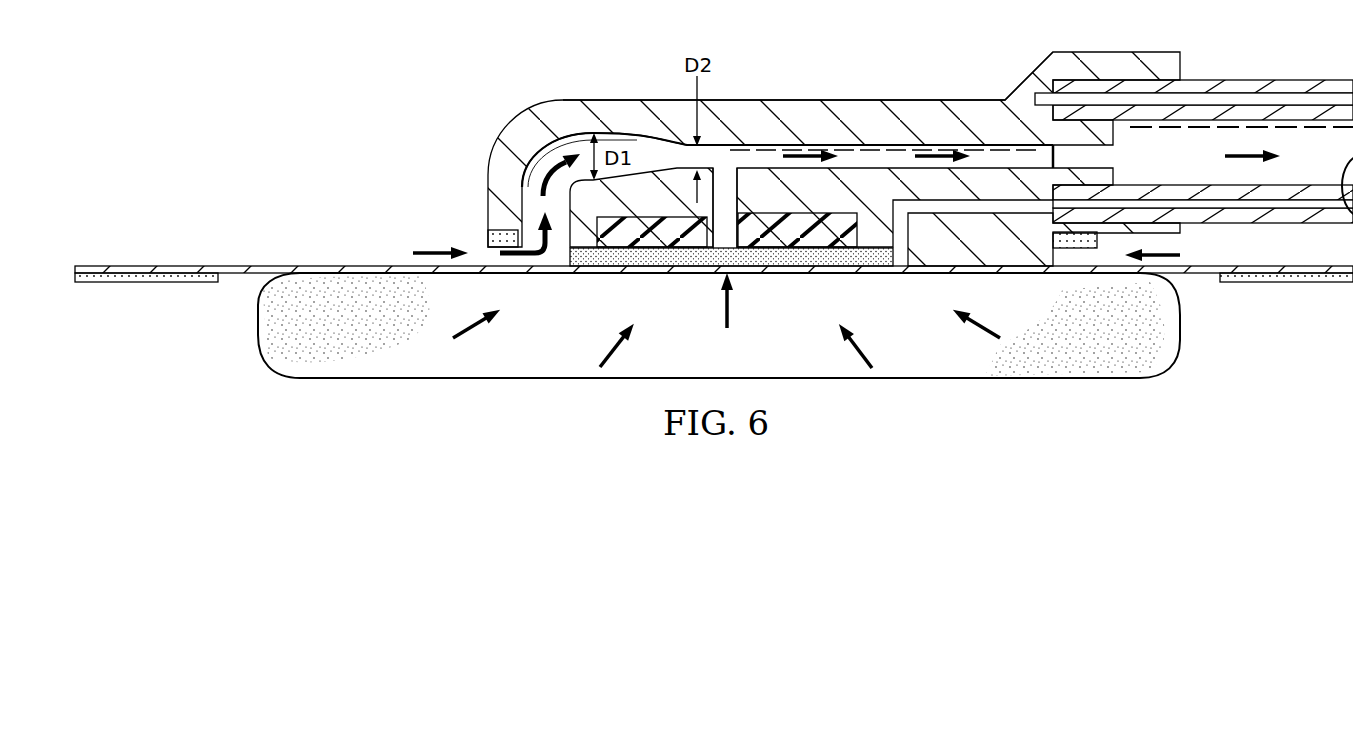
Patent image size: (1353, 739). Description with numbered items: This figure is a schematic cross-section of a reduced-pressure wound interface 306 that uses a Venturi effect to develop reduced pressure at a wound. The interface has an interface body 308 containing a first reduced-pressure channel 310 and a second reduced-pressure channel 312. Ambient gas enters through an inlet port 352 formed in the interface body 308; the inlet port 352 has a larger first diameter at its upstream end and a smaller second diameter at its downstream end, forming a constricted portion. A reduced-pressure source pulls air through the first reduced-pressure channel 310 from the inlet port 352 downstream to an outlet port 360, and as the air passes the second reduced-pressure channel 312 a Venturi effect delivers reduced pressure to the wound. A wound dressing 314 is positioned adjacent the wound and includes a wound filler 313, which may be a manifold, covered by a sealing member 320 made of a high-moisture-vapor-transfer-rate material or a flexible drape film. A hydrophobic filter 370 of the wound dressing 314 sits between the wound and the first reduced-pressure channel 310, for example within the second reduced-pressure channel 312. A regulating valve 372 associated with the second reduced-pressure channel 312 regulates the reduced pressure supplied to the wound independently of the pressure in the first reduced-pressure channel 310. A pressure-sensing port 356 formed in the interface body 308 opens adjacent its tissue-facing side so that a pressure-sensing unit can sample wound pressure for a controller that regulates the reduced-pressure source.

The reduced-pressure wound interface 306 is at (816, 66).
The interface body 308 is at (918, 100).
The first reduced-pressure channel 310 is at (544, 162).
The second reduced-pressure channel 312 is at (728, 172).
The wound filler 313 is at (266, 361).
The wound dressing 314 is at (224, 256).
The sealing member 320 is at (128, 266).
The inlet port 352 is at (484, 253).
The pressure-sensing port 356 is at (902, 252).
The outlet port 360 is at (1112, 157).
The hydrophobic filter 370 is at (622, 260).
The regulating valve 372 is at (775, 237).